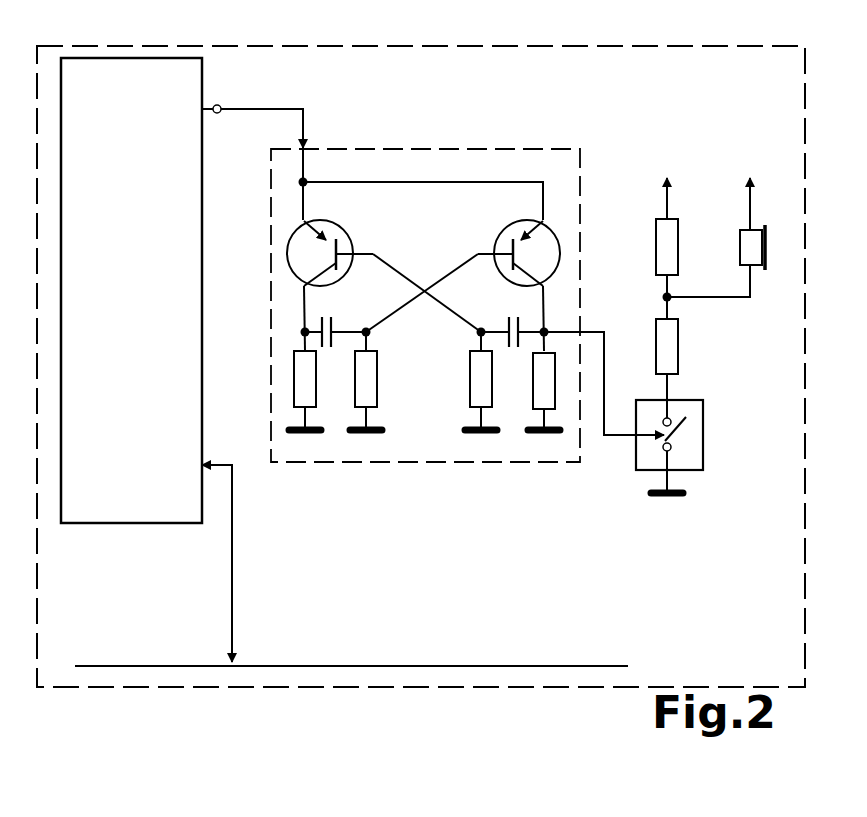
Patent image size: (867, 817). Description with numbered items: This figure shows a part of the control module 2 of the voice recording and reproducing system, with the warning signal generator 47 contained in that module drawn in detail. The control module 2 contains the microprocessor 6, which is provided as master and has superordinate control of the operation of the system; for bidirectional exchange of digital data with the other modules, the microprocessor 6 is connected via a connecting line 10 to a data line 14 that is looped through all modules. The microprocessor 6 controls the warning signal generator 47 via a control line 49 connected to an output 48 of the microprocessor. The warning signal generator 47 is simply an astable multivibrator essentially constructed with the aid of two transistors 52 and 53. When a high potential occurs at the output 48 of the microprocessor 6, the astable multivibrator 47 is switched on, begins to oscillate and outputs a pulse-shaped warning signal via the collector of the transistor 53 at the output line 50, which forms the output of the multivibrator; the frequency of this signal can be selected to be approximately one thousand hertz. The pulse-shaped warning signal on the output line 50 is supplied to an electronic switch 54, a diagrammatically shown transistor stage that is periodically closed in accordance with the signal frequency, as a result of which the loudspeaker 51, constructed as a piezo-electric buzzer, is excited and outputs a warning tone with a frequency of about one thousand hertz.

The control module 2 is at (524, 45).
The microprocessor 6 is at (122, 510).
The connecting line 10 is at (232, 557).
The data line 14 is at (325, 666).
The warning signal generator 47 is at (459, 147).
The output 48 is at (219, 105).
The control line 49 is at (268, 108).
The output line 50 is at (610, 345).
The loudspeaker 51 is at (757, 242).
The transistor 52 is at (347, 247).
The transistor 53 is at (500, 246).
The electronic switch 54 is at (690, 457).